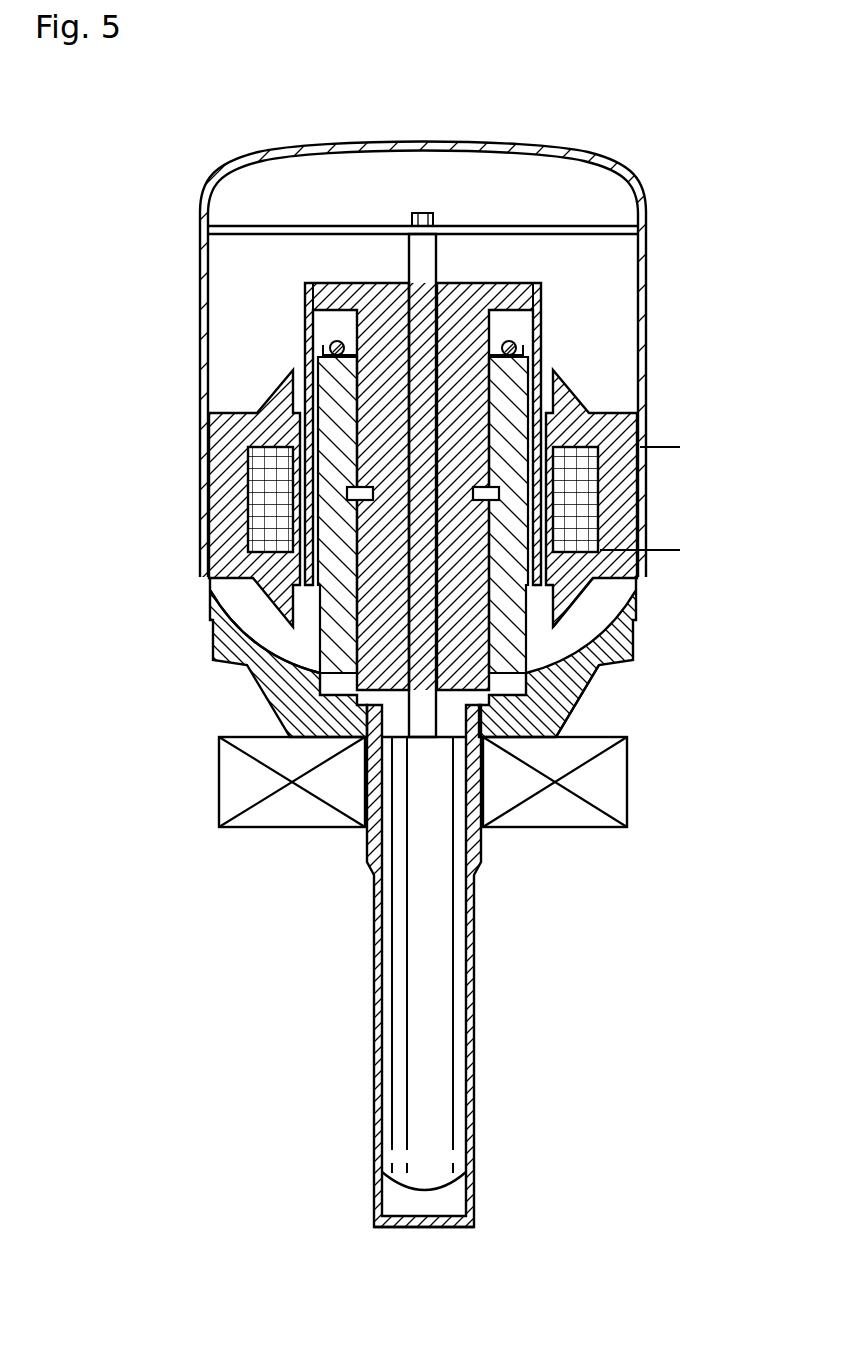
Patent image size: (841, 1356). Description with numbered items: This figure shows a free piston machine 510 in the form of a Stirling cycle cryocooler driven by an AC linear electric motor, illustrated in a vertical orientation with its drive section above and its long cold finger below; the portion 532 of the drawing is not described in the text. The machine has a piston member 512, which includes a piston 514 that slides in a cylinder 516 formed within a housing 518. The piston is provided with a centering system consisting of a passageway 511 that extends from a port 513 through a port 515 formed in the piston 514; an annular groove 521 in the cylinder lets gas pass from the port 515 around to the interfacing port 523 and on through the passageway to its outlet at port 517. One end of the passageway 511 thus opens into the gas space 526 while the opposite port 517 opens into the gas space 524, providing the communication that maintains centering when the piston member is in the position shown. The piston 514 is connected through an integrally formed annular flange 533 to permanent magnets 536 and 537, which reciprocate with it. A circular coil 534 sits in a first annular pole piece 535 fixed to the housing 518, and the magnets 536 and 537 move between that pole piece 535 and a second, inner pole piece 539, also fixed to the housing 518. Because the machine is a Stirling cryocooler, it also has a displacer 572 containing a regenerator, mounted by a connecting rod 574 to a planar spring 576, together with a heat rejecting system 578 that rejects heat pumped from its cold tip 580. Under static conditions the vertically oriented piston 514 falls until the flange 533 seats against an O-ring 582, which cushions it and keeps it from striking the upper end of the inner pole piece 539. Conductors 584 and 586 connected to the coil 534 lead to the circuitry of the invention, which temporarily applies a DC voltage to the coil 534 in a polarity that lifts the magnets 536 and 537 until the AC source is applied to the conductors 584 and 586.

The free piston machine 510 is at (458, 113).
The passageway 511 is at (378, 603).
The piston member 512 is at (320, 288).
The port 513 is at (360, 690).
The piston 514 is at (485, 593).
The port 515 is at (350, 487).
The cylinder 516 is at (475, 634).
The port 517 is at (477, 284).
The housing 518 is at (648, 327).
The annular groove 521 is at (350, 490).
The interfacing port 523 is at (500, 493).
The gas space 524 is at (226, 267).
The gas space 526 is at (365, 697).
The stem 532 is at (544, 1003).
The flange 533 is at (334, 286).
The circular coil 534 is at (582, 487).
The first annular pole piece 535 is at (612, 568).
The permanent magnet 536 is at (556, 400).
The permanent magnet 537 is at (297, 413).
The second pole piece 539 is at (325, 362).
The displacer 572 is at (452, 1090).
The connecting rod 574 is at (428, 243).
The planar spring 576 is at (373, 232).
The heat rejecting system 578 is at (615, 784).
The cold tip 580 is at (423, 1226).
The O-ring 582 is at (538, 338).
The conductor 584 is at (668, 550).
The conductor 586 is at (662, 447).